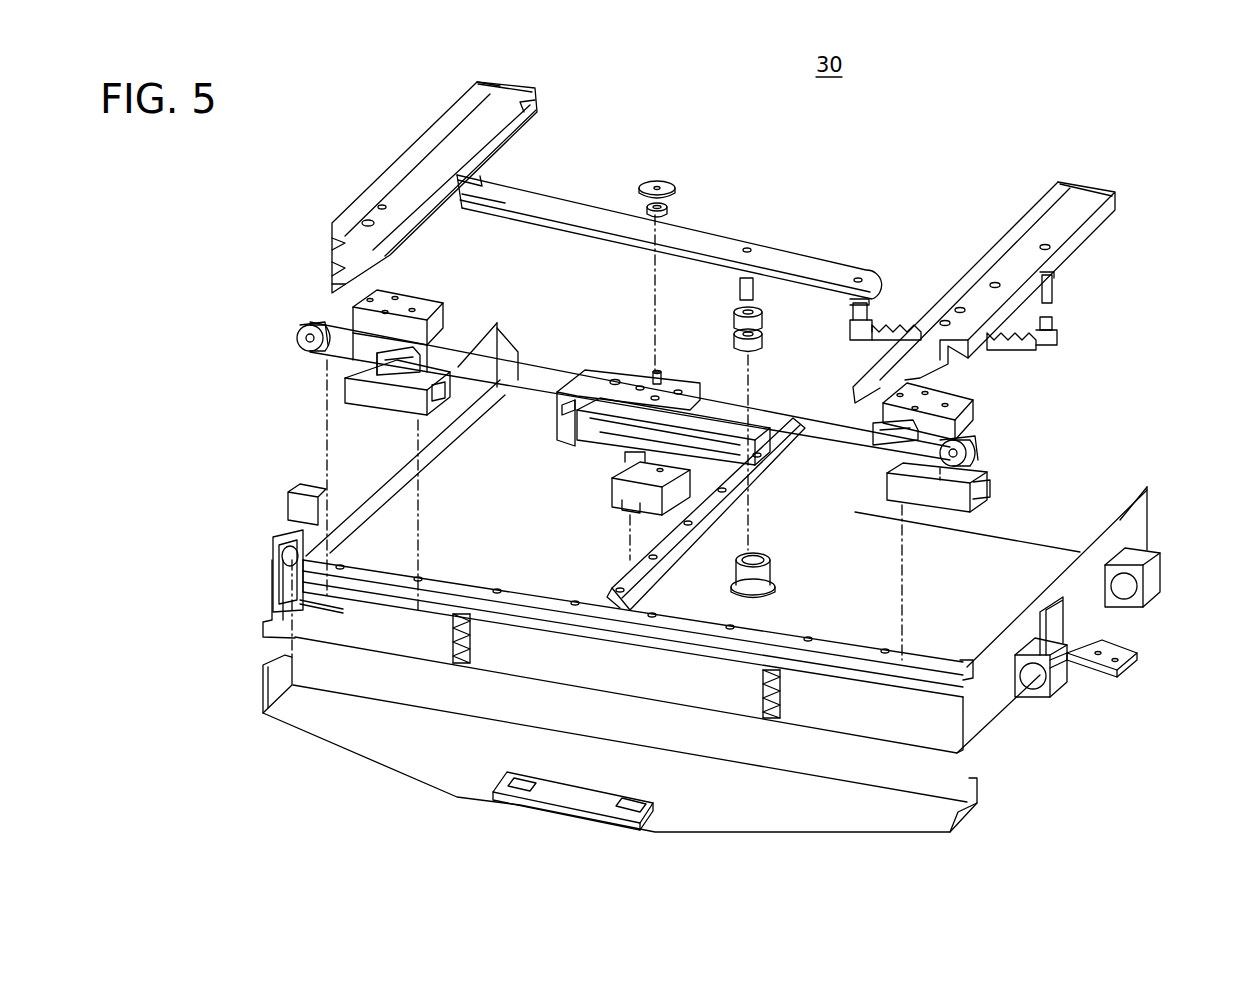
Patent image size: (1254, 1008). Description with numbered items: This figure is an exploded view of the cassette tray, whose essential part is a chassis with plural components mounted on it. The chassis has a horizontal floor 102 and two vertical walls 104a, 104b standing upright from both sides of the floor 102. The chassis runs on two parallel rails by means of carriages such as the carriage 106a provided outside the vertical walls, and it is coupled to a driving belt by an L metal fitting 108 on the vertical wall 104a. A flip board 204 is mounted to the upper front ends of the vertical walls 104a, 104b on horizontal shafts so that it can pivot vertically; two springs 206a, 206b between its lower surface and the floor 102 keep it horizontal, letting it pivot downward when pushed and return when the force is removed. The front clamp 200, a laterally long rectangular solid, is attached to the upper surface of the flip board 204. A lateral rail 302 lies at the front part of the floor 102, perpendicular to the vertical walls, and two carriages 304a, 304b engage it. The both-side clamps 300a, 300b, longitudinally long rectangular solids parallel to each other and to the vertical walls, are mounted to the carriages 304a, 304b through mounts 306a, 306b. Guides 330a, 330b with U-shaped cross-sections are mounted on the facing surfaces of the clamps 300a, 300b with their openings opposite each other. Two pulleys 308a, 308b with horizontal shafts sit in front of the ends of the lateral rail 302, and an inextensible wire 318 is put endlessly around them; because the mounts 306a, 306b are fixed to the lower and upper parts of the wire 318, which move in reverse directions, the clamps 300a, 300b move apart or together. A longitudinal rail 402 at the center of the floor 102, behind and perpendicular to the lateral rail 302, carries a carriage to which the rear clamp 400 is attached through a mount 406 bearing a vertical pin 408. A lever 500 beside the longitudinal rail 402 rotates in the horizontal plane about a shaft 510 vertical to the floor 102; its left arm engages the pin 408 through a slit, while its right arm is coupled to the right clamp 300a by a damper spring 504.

The horizontal floor 102 is at (1025, 567).
The vertical wall 104a is at (1137, 512).
The vertical wall 104b is at (497, 340).
The carriage 106a is at (1150, 570).
The L metal fitting 108 is at (1125, 658).
The front clamp 200 is at (605, 800).
The flip board 204 is at (428, 750).
The spring 206a is at (760, 708).
The spring 206b is at (462, 657).
The both-side clamp 300a is at (1088, 198).
The both-side clamp 300b is at (497, 98).
The lateral rail 302 is at (863, 652).
The carriage 304a is at (965, 490).
The carriage 304b is at (353, 392).
The mount 306a is at (973, 400).
The mount 306b is at (407, 303).
The pulley 308a is at (977, 460).
The pulley 308b is at (312, 326).
The wire 318 is at (565, 375).
The guide 330a is at (1063, 180).
The guide 330b is at (525, 93).
The rear clamp 400 is at (720, 453).
The longitudinal rail 402 is at (770, 440).
The mount 406 is at (592, 373).
The vertical pin 408 is at (672, 368).
The lever 500 is at (717, 245).
The spring 504 is at (898, 317).
The shaft 510 is at (753, 293).